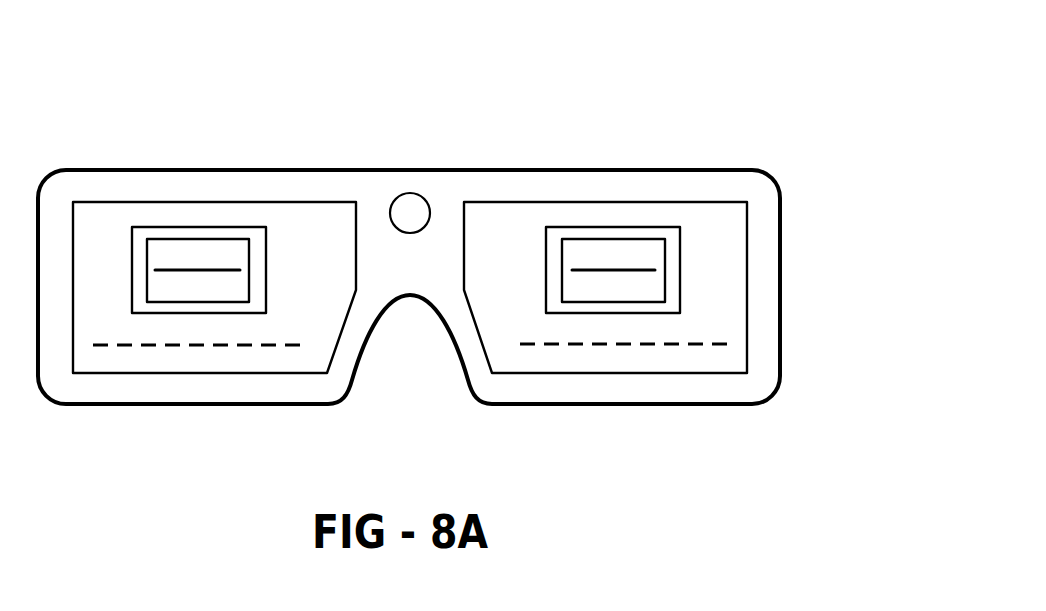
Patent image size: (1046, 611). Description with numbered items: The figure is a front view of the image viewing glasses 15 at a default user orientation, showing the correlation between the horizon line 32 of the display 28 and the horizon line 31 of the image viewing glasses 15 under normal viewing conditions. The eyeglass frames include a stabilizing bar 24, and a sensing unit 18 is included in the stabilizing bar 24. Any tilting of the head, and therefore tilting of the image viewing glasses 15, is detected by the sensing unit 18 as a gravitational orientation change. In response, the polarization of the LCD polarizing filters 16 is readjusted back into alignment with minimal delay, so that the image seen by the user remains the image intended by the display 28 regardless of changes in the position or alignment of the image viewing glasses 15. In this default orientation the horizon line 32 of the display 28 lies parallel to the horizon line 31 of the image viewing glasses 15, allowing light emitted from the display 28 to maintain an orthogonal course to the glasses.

The image viewing glasses 15 is at (672, 143).
The LCD polarizing filters 16 is at (485, 312).
The sensing unit 18 is at (411, 203).
The stabilizing bar 24 is at (763, 196).
The display 28 is at (131, 250).
The horizon line of the image viewing glasses 31 is at (202, 345).
The horizon line of the display 32 is at (200, 270).